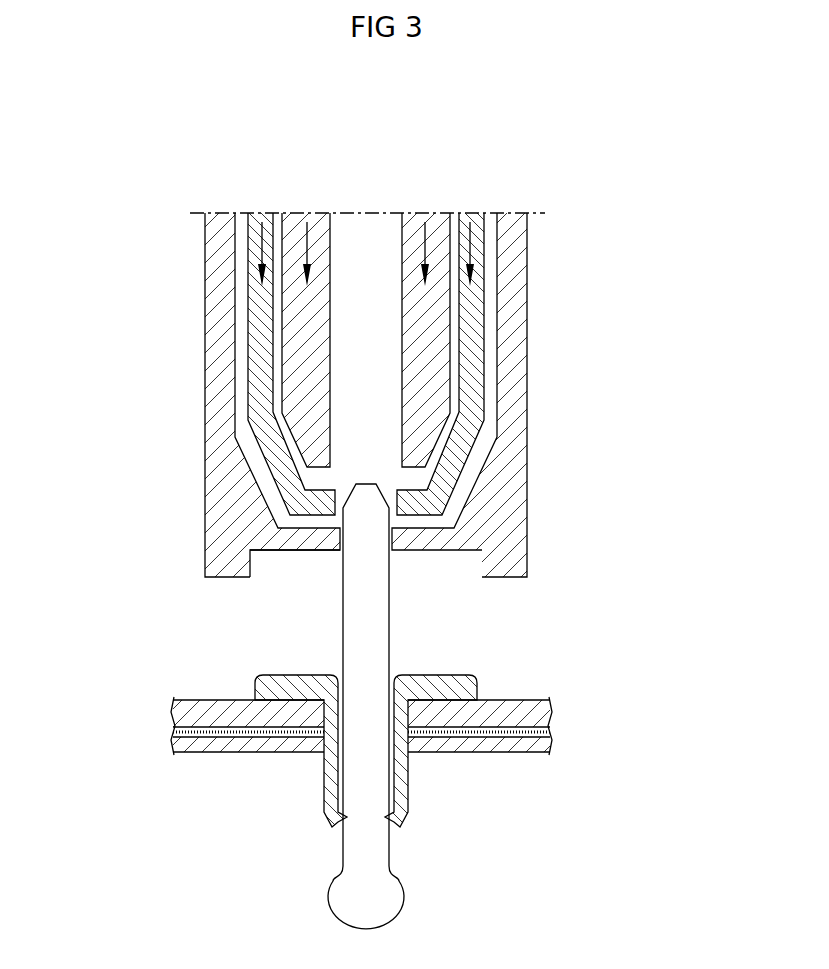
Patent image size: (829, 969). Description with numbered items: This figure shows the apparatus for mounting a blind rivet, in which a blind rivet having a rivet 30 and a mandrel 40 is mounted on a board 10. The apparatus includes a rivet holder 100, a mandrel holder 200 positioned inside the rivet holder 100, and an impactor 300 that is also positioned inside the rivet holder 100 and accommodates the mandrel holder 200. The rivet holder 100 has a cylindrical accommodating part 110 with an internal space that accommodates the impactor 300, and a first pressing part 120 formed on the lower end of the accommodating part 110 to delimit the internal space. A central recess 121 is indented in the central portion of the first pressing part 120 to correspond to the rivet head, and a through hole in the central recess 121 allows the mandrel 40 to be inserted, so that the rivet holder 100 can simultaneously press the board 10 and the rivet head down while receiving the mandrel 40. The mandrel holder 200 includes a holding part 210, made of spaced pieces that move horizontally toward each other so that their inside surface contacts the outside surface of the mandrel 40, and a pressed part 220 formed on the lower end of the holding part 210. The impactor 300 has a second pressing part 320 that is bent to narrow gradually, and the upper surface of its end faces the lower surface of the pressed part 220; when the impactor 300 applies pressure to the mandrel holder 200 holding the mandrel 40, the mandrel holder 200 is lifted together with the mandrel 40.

The board 10 is at (530, 714).
The rivet 30 is at (326, 783).
The mandrel 40 is at (385, 785).
The rivet holder 100 is at (382, 368).
The accommodating part 110 is at (515, 300).
The first pressing part 120 is at (382, 572).
The central recess 121 is at (293, 560).
The mandrel holder 200 is at (428, 212).
The holding part 210 is at (300, 355).
The pressed part 220 is at (305, 490).
The impactor 300 is at (266, 212).
The second pressing part 320 is at (312, 492).